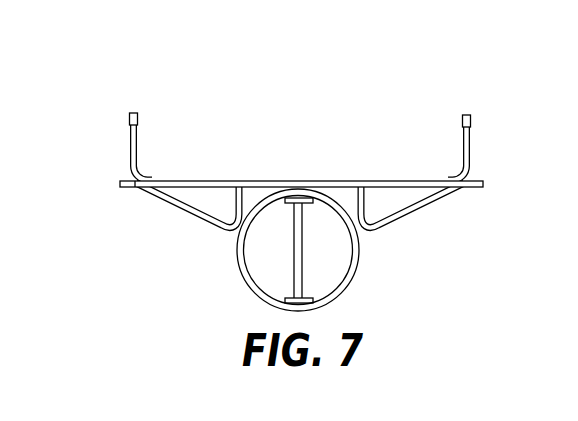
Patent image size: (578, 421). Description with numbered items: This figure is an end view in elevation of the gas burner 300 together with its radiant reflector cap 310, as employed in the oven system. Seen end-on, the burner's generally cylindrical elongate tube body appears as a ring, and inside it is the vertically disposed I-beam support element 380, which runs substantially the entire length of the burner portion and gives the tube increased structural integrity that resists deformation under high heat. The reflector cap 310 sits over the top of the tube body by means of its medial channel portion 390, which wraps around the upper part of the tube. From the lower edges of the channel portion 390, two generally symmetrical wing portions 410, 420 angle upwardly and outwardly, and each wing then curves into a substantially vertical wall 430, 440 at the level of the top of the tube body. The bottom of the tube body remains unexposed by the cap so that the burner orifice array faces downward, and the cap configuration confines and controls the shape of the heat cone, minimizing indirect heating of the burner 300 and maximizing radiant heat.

The gas burner 300 is at (323, 177).
The radiant reflector cap 310 is at (478, 182).
The I-beam support element 380 is at (305, 262).
The medial channel portion 390 is at (252, 200).
The wing portion 410 is at (175, 205).
The wing portion 420 is at (418, 208).
The vertical wall 430 is at (138, 143).
The vertical wall 440 is at (463, 145).